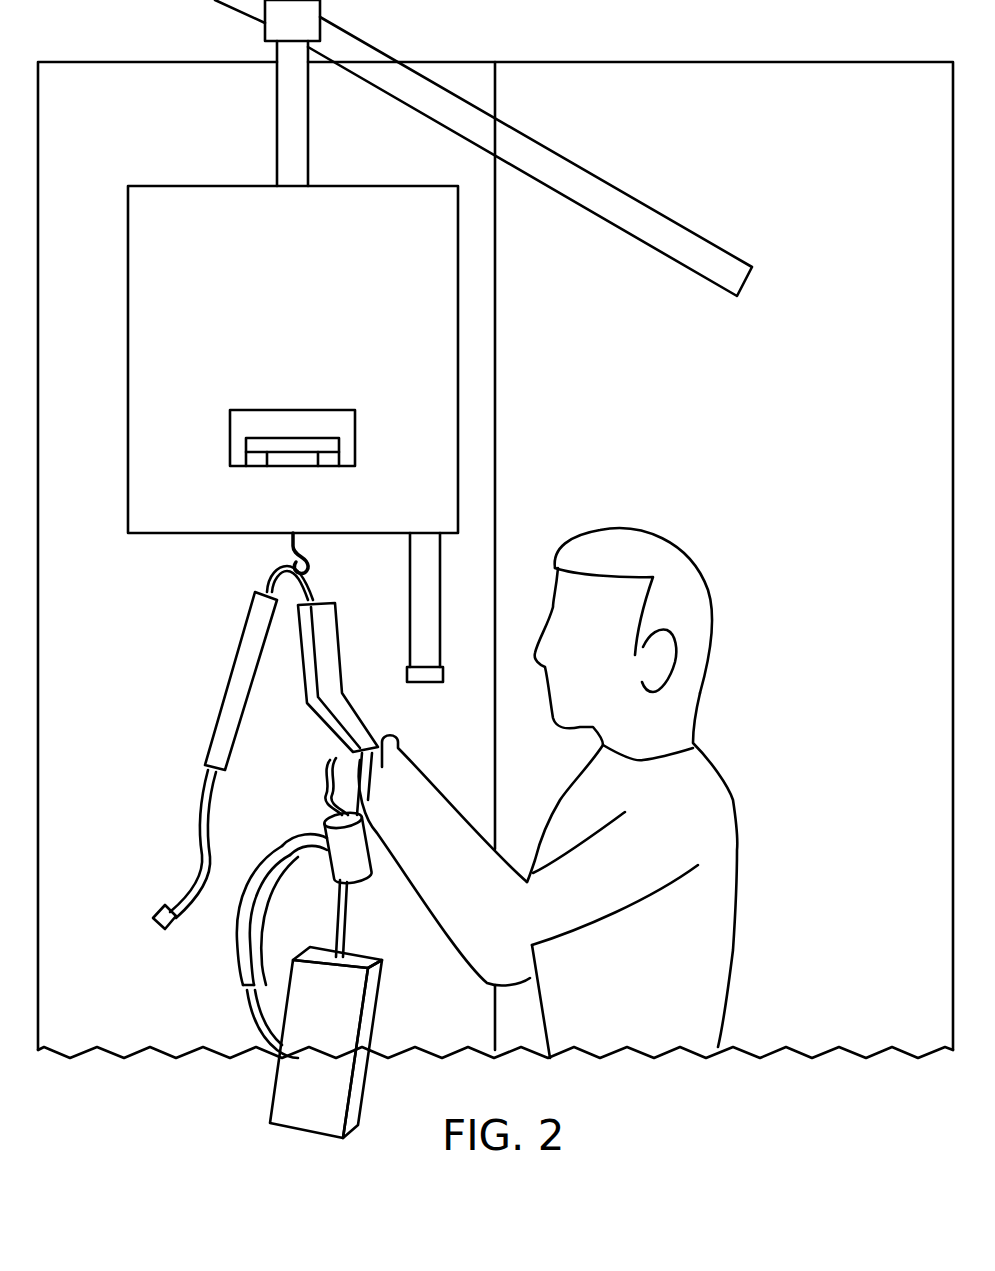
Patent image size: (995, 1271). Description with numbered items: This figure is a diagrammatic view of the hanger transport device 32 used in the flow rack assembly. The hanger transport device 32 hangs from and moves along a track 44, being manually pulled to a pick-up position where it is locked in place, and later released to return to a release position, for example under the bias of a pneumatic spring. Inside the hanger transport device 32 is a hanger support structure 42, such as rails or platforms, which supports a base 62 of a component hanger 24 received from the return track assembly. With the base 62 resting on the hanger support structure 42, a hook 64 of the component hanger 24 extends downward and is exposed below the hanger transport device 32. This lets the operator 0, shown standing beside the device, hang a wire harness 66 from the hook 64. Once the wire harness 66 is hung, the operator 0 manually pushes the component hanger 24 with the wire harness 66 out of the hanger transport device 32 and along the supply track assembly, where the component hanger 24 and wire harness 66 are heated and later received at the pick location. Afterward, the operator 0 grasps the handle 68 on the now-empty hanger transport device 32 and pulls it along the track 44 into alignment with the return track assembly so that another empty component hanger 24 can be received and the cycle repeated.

The operator 0 is at (757, 595).
The component hanger 24 is at (300, 435).
The hanger transport device 32 is at (118, 305).
The hanger support structure 42 is at (270, 423).
The track 44 is at (610, 188).
The base 62 is at (336, 437).
The hook 64 is at (290, 545).
The wire harness 66 is at (232, 675).
The handle 68 is at (417, 650).